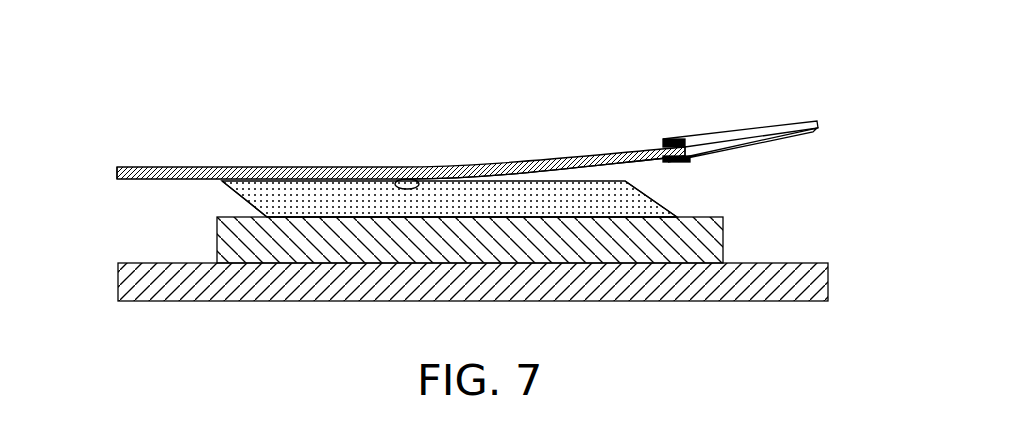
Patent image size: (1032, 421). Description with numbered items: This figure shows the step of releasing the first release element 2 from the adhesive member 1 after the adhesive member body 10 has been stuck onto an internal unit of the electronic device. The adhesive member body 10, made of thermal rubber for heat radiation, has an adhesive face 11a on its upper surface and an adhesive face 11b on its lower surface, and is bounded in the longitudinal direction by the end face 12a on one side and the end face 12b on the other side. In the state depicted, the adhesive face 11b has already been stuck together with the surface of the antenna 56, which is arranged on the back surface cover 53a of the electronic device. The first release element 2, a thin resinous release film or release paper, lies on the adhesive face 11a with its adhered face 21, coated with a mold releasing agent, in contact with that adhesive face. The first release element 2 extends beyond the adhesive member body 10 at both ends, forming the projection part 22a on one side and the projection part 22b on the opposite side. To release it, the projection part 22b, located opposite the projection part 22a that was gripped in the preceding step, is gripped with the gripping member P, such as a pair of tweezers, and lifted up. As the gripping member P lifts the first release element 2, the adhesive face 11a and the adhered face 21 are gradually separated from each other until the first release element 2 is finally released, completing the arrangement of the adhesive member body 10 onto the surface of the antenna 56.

The adhesive member 1 is at (637, 75).
The first release element 2 is at (266, 148).
The adhesive member body 10 is at (343, 189).
The adhesive face 11a is at (538, 168).
The adhesive face 11b is at (313, 237).
The end face 12a is at (247, 198).
The end face 12b is at (652, 197).
The adhered face 21 is at (410, 178).
The projection part 22a is at (165, 183).
The projection part 22b is at (650, 160).
The back surface cover 53a is at (828, 280).
The antenna 56 is at (723, 238).
The gripping member P is at (810, 121).